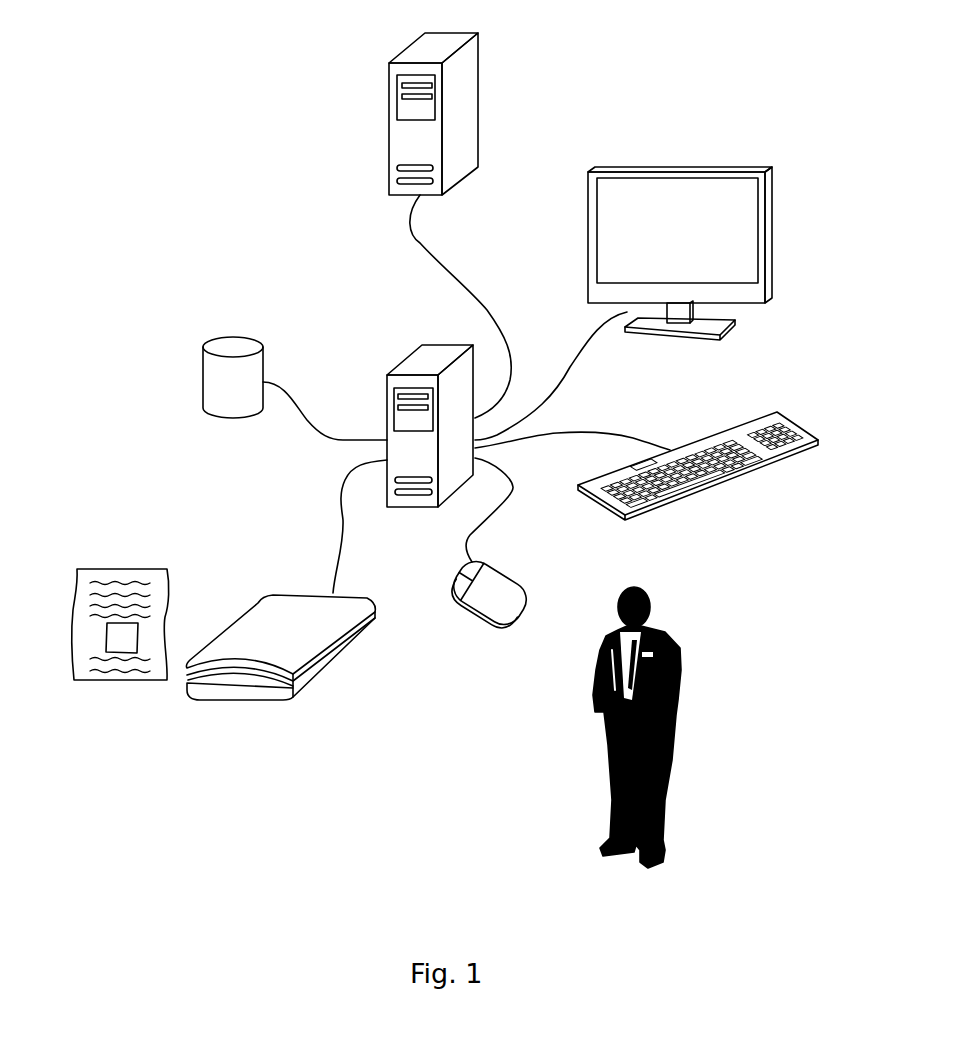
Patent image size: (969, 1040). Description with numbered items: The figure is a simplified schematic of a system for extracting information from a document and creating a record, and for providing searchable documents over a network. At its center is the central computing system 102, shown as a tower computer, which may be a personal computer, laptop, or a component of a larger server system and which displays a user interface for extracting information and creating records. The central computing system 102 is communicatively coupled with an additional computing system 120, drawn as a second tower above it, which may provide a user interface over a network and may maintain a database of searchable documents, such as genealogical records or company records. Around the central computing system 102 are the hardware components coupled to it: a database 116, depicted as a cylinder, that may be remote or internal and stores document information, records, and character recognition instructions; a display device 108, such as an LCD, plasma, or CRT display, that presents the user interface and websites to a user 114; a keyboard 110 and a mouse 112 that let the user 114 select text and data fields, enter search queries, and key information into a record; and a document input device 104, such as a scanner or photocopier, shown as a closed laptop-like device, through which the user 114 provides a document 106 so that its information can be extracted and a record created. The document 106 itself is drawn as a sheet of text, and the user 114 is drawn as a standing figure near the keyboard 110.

The central computing system 102 is at (410, 355).
The document input device 104 is at (258, 698).
The document 106 is at (130, 568).
The display device 108 is at (713, 167).
The keyboard 110 is at (750, 473).
The mouse 112 is at (475, 610).
The user 114 is at (678, 705).
The database 116 is at (230, 335).
The additional computing system 120 is at (478, 85).